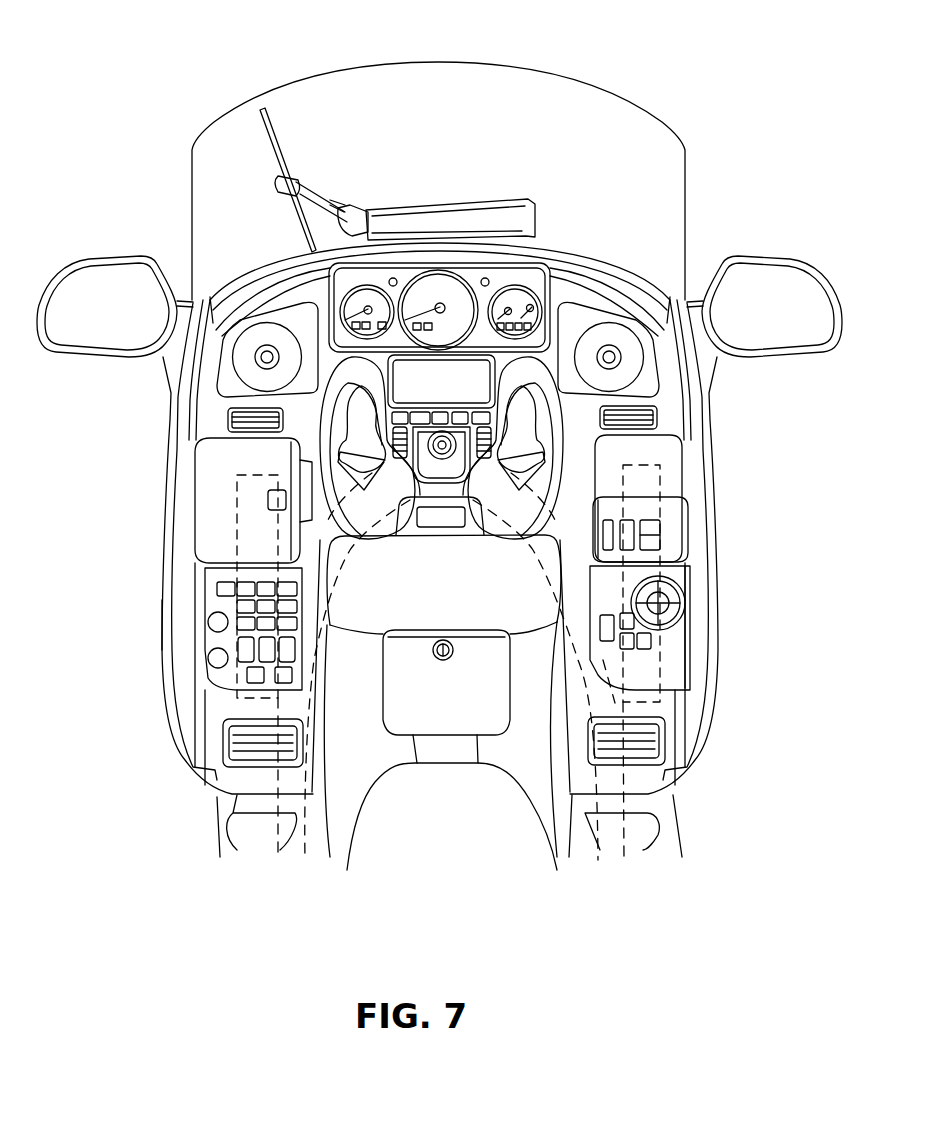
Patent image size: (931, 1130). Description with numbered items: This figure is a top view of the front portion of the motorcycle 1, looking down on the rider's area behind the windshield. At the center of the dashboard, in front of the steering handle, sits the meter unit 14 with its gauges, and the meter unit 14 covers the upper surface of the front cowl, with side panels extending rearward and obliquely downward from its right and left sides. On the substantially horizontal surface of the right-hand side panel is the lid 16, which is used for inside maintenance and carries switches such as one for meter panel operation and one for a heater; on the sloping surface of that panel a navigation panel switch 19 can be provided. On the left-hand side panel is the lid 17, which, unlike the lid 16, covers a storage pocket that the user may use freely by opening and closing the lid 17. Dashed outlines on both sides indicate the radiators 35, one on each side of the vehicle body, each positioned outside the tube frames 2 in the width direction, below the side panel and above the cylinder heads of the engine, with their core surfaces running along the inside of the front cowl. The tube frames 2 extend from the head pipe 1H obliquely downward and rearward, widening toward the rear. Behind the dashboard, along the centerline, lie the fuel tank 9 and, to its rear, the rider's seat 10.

The motorcycle 1 is at (134, 531).
The tube frames 2 is at (250, 715).
The fuel tank 9 is at (520, 752).
The rider's seat 10 is at (420, 833).
The meter unit 14 is at (545, 287).
The lid 16 is at (673, 453).
The lid 17 is at (215, 468).
The navigation panel switch 19 is at (687, 583).
The radiators 35 is at (237, 517).
The head pipe 1H is at (447, 490).